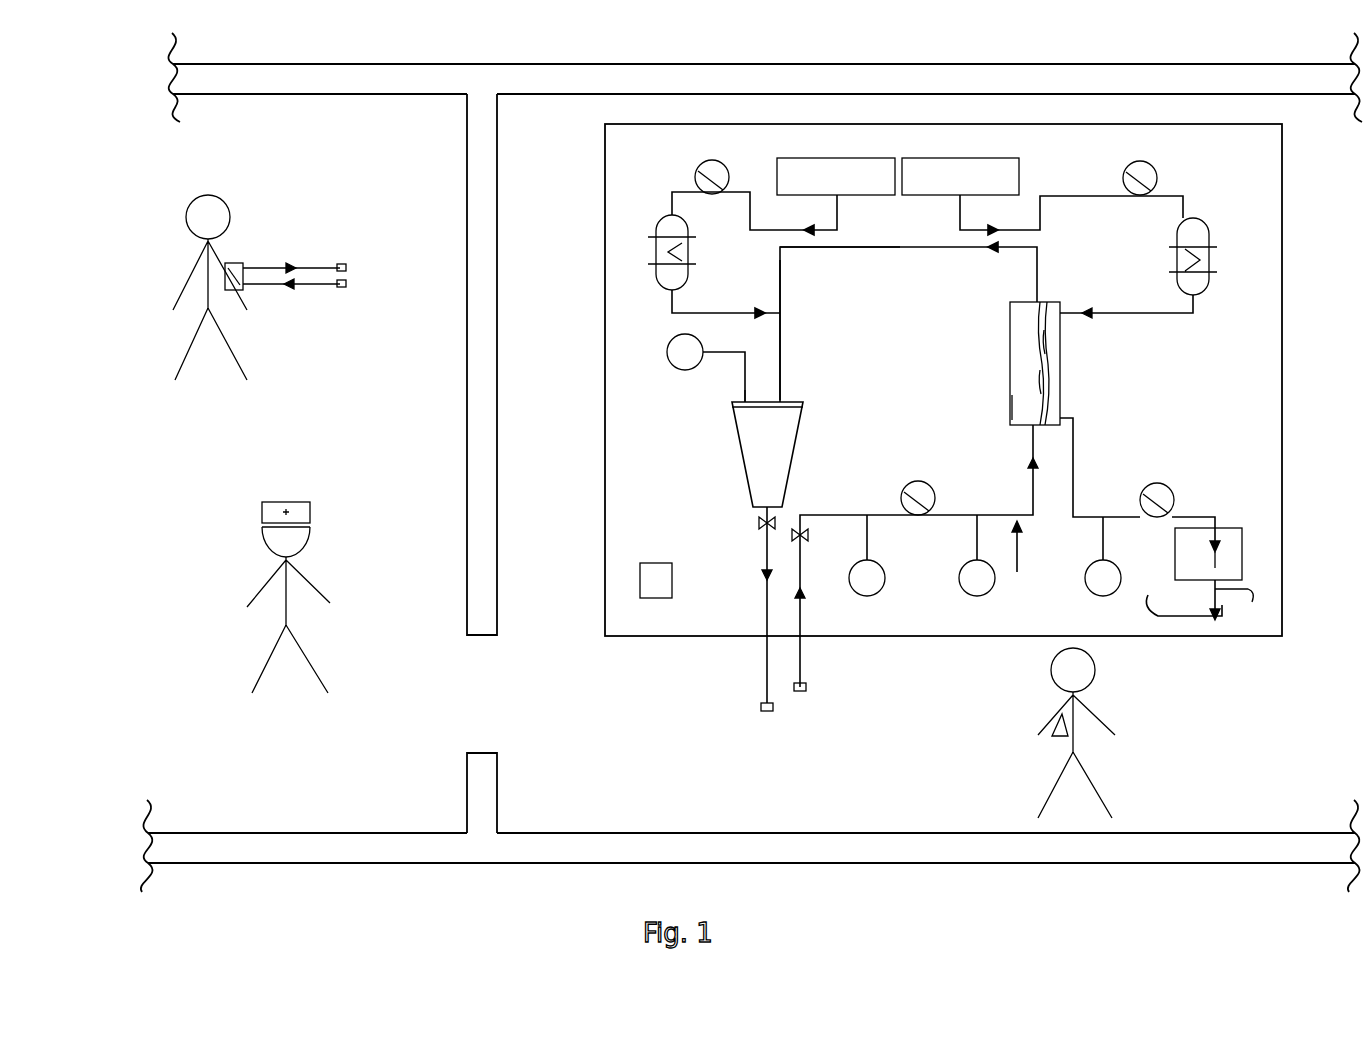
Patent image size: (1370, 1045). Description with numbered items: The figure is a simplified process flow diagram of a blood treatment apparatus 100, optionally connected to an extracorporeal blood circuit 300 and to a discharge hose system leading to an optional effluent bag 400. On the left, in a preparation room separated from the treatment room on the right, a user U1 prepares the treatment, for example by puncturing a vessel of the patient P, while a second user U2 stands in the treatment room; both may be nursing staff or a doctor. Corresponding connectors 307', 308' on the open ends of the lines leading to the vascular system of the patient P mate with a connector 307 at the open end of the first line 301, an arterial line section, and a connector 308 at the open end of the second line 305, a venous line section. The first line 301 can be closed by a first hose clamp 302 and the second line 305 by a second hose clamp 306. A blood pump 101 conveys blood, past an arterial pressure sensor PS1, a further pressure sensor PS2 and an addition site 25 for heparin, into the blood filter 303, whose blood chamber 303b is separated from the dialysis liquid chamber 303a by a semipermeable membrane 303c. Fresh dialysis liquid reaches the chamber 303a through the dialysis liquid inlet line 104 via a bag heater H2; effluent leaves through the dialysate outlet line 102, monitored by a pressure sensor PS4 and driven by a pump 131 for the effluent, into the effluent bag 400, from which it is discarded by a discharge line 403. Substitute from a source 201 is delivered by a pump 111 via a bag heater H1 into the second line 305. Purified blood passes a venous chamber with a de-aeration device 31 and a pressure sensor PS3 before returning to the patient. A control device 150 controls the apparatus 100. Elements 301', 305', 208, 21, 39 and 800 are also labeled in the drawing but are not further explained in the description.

The patient P is at (182, 266).
The portable gas delivery device 301' is at (283, 233).
The portable tubing 305' is at (291, 325).
The corresponding connector 307' is at (367, 246).
The corresponding connector 308' is at (362, 293).
The user U1 is at (232, 578).
The user U2 is at (1146, 708).
The blood treatment apparatus 100 is at (604, 380).
The pump for substitute 111 is at (706, 163).
The bag heater H1 is at (663, 252).
The source with substitute 201 is at (836, 176).
The second gas reservoir 208 is at (960, 176).
The second compressor 21 is at (1158, 181).
The bag heater H2 is at (1202, 256).
The dialysis liquid inlet line 104 is at (1193, 313).
The second line 305 is at (840, 270).
The extracorporeal blood circuit 300 is at (893, 369).
The blood filter 303 is at (1000, 318).
The dialysis liquid chamber 303a is at (1046, 385).
The blood chamber 303b is at (1016, 404).
The semipermeable membrane 303c is at (1046, 348).
The pressure sensor PS3 is at (706, 368).
The de-aeration device 31 is at (745, 389).
The mixing funnel 39 is at (752, 440).
The second hose clamp 306 is at (756, 530).
The connector 308 is at (785, 733).
The first hose clamp 302 is at (812, 518).
The first line 301 is at (835, 514).
The connector 307 is at (840, 708).
The blood pump 101 is at (932, 486).
The control device 150 is at (660, 598).
The arterial sensor PS1 is at (867, 567).
The pressure sensor PS2 is at (977, 567).
The addition site for heparin 25 is at (1022, 560).
The dialysate outlet line 102 is at (1076, 480).
The pump for the effluent 131 is at (1157, 483).
The pressure sensor PS4 is at (1103, 568).
The effluent bag 400 is at (1248, 557).
The exhaust collector 800 is at (1184, 598).
The discharge line 403 is at (1238, 600).